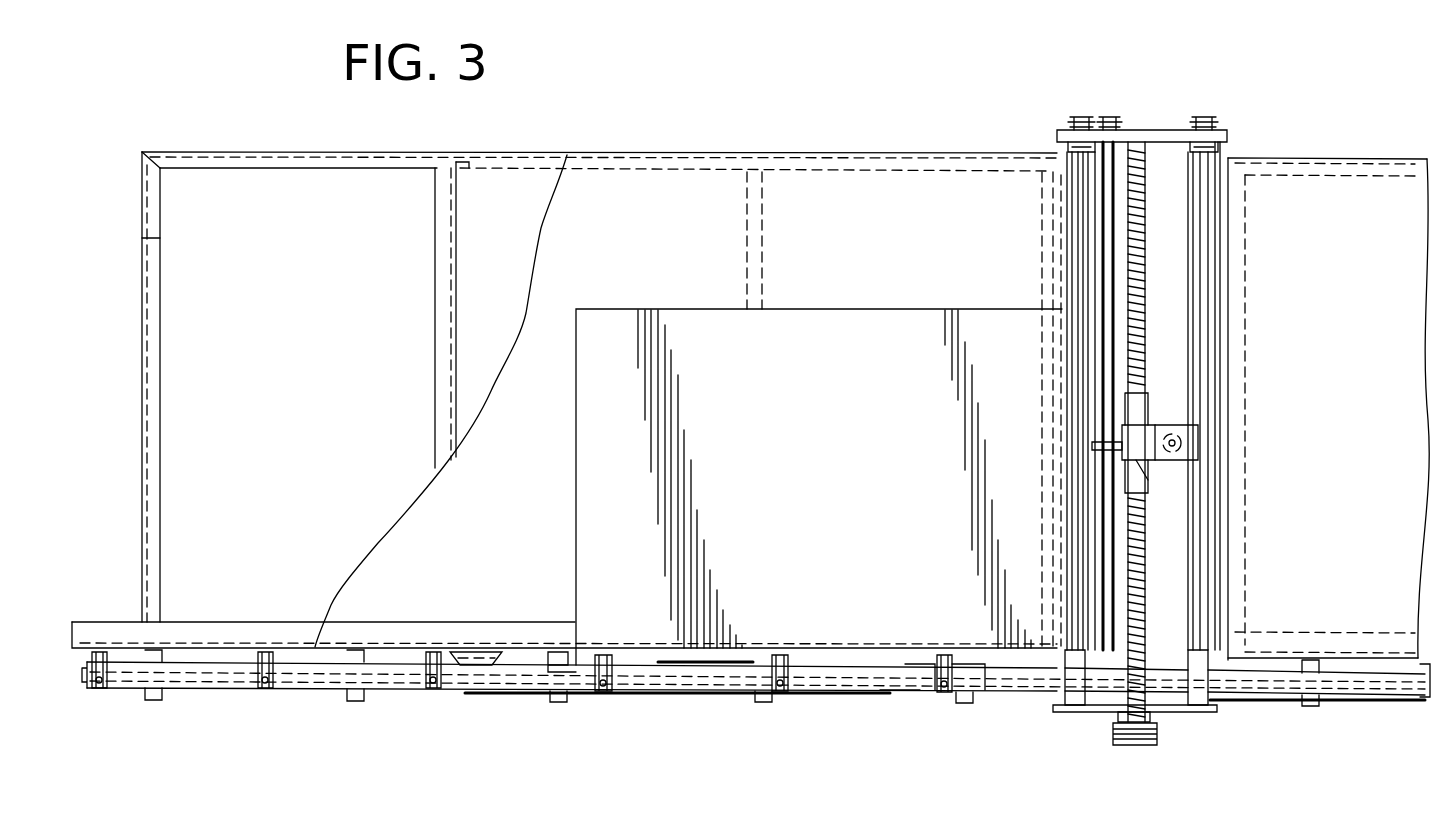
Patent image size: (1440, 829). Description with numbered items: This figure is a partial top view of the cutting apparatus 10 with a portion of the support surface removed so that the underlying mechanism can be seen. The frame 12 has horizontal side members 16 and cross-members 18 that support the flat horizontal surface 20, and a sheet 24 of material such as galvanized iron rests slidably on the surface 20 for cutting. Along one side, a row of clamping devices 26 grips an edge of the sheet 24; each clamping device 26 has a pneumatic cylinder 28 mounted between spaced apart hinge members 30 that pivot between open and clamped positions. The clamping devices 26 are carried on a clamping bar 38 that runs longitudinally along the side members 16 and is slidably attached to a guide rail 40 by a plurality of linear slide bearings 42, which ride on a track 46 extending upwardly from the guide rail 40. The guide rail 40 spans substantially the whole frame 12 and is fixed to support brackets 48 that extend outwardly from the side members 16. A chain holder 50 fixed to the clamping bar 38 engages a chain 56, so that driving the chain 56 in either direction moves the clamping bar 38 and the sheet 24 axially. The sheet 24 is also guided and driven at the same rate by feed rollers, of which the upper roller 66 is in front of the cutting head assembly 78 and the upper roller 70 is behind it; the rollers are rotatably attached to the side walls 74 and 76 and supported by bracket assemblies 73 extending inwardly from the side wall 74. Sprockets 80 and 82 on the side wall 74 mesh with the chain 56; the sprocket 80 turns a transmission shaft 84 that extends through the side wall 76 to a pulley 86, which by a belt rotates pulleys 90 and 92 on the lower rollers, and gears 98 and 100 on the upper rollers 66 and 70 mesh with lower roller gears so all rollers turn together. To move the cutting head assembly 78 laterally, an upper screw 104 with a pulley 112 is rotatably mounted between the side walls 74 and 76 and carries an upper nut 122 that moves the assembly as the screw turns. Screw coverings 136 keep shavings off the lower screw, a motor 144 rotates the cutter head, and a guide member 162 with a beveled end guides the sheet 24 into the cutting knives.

The cutting apparatus 10 is at (1178, 78).
The frame 12 is at (548, 150).
The horizontal side members 16 is at (347, 168).
The cross-members 18 is at (142, 330).
The flat horizontal surface 20 is at (500, 562).
The sheet 24 is at (592, 470).
The clamping devices 26 is at (98, 692).
The pneumatic cylinder 28 is at (951, 694).
The hinge members 30 is at (928, 694).
The clamping bar 38 is at (318, 692).
The guide rail 40 is at (1385, 702).
The linear slide bearings 42 is at (542, 670).
The track 46 is at (1326, 703).
The support brackets 48 is at (153, 702).
The chain holder 50 is at (897, 702).
The chain 56 is at (717, 698).
The feed roller 66 is at (1075, 202).
The feed roller 70 is at (1193, 182).
The bracket assemblies 73 is at (1075, 692).
The side wall 74 is at (1183, 713).
The side wall 76 is at (1220, 152).
The cutting head assembly 78 is at (1157, 424).
The sprocket 80 is at (1112, 713).
The sprocket 82 is at (1165, 713).
The transmission shaft 84 is at (1107, 158).
The pulley 86 is at (1110, 116).
The pulley 90 is at (1205, 116).
The pulley 92 is at (1080, 116).
The gear 98 is at (1075, 153).
The gear 100 is at (1212, 164).
The upper screw 104 is at (1146, 612).
The pulley 112 is at (1128, 746).
The upper nut 122 is at (1142, 472).
The screw coverings 136 is at (1125, 405).
The motor 144 is at (1178, 423).
The guide member 162 is at (1100, 446).